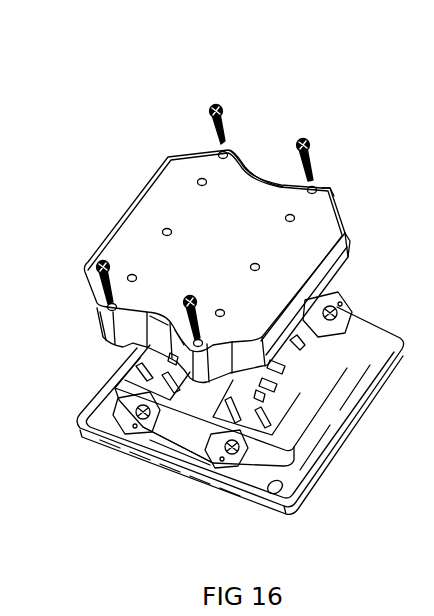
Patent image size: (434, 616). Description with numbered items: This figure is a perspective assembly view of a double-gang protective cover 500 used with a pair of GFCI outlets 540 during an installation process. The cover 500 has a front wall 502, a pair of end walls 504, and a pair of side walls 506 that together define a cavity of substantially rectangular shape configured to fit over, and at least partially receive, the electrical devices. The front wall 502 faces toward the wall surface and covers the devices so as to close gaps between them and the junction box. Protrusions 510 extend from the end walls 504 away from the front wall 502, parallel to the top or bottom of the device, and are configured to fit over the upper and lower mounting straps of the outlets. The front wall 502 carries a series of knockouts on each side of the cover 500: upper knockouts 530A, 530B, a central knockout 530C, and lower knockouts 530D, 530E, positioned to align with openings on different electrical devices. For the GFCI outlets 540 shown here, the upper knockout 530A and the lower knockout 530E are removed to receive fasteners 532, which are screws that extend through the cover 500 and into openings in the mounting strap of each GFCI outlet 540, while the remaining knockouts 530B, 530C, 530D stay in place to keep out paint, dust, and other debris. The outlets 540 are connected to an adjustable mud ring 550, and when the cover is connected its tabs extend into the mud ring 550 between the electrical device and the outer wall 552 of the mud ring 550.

The double-gang protective cover 500 is at (148, 58).
The front wall 502 is at (307, 233).
The end walls 504 is at (267, 177).
The side walls 506 is at (324, 268).
The protrusions 510 is at (324, 183).
The upper knockout 530A is at (218, 150).
The upper knockout 530B is at (198, 180).
The central knockout 530C is at (163, 230).
The lower knockout 530D is at (128, 276).
The lower knockout 530E is at (90, 279).
The fastener 532 is at (212, 100).
The GFCI outlet 540 is at (122, 372).
The adjustable mud ring 550 is at (136, 456).
The outer wall 552 is at (297, 437).